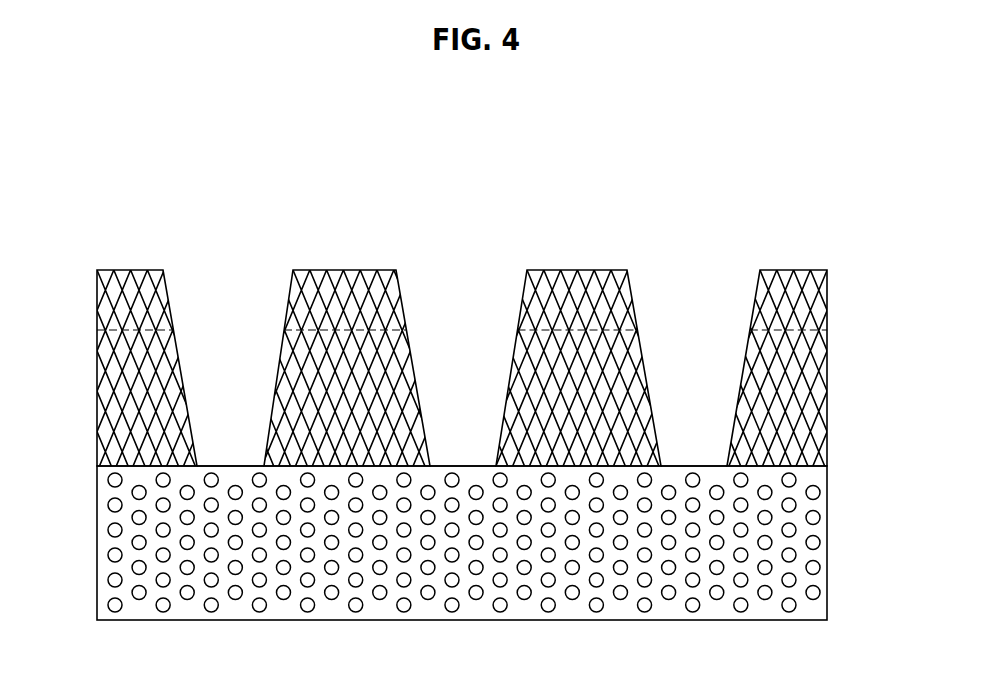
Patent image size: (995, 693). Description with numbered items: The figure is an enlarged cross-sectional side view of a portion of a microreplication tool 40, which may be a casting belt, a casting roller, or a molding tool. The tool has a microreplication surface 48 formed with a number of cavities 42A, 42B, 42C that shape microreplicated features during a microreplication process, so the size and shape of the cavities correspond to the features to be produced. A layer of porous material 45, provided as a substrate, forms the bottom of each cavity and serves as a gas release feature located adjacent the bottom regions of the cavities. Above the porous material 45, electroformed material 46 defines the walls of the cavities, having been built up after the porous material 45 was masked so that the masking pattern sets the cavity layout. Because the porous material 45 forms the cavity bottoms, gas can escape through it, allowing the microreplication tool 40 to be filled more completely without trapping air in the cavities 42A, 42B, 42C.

The microreplication tool 40 is at (71, 444).
The cavity 42A is at (233, 437).
The cavity 42B is at (459, 437).
The cavity 42C is at (701, 437).
The porous material 45 is at (843, 538).
The electroformed material 46 is at (841, 362).
The microreplication surface 48 is at (394, 225).